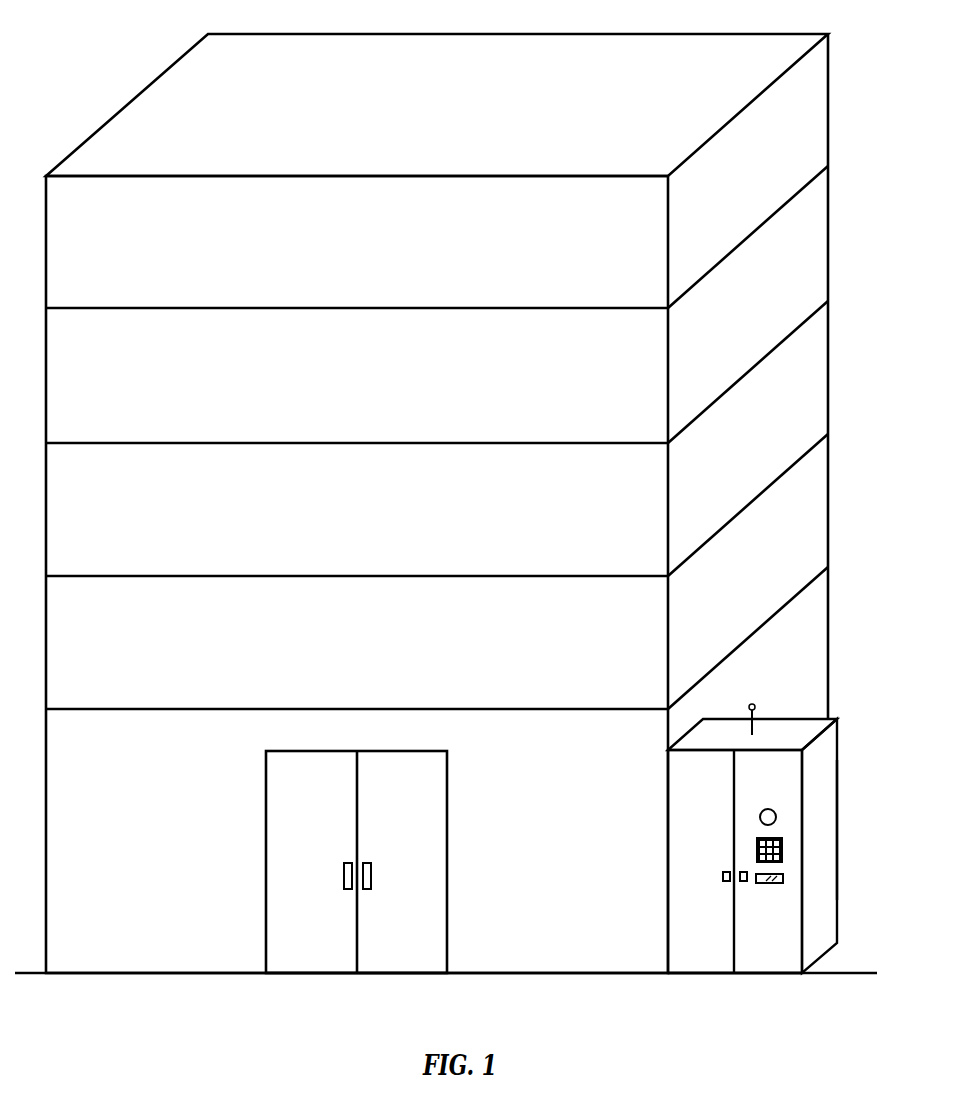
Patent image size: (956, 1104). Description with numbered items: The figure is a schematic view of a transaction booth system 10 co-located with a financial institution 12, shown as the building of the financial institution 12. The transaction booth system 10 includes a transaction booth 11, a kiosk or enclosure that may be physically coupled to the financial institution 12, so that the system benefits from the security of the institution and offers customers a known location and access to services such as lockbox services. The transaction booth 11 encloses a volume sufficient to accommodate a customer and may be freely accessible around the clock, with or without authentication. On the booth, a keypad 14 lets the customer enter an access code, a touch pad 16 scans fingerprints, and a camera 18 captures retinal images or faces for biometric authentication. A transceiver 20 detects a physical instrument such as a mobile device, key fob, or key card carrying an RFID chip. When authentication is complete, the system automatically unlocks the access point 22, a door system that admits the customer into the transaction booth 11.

The transaction booth system 10 is at (824, 759).
The transaction booth 11 is at (838, 829).
The financial institution 12 is at (518, 33).
The keypad 14 is at (783, 850).
The touch pad 16 is at (783, 879).
The camera 18 is at (778, 817).
The transceiver 20 is at (755, 704).
The access point 22 is at (705, 958).